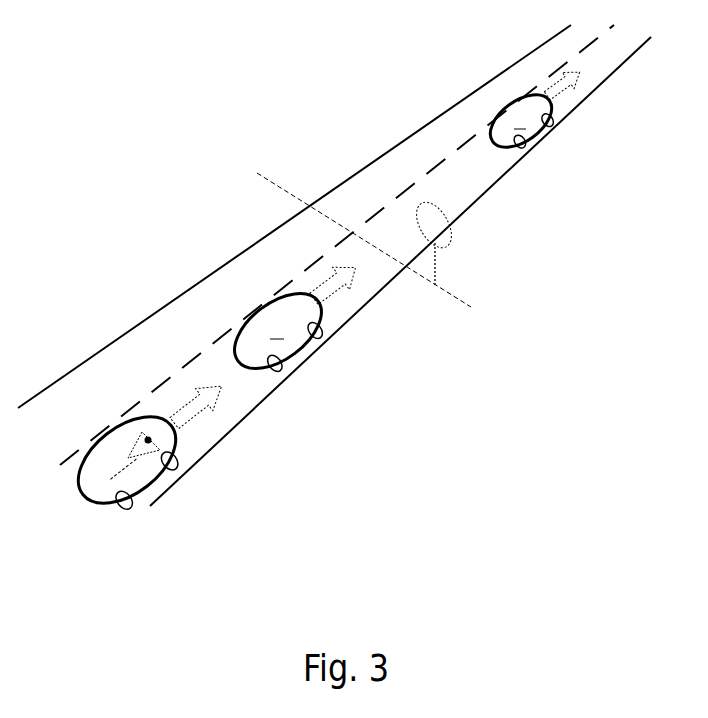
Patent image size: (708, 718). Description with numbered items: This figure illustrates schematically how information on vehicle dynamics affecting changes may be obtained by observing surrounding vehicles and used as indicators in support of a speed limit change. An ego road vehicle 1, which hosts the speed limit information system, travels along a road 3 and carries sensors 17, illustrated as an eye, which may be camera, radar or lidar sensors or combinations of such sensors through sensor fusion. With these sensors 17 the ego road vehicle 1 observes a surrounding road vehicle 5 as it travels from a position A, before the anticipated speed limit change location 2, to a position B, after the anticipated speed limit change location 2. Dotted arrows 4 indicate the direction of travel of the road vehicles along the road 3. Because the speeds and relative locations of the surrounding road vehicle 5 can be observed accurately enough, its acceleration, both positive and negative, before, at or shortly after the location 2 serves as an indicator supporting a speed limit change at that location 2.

The road vehicle 1 is at (147, 506).
The location 2 is at (436, 287).
The road 3 is at (464, 190).
The dotted arrows 4 is at (203, 407).
The surrounding road vehicle 5 is at (313, 347).
The sensors 17 is at (180, 452).